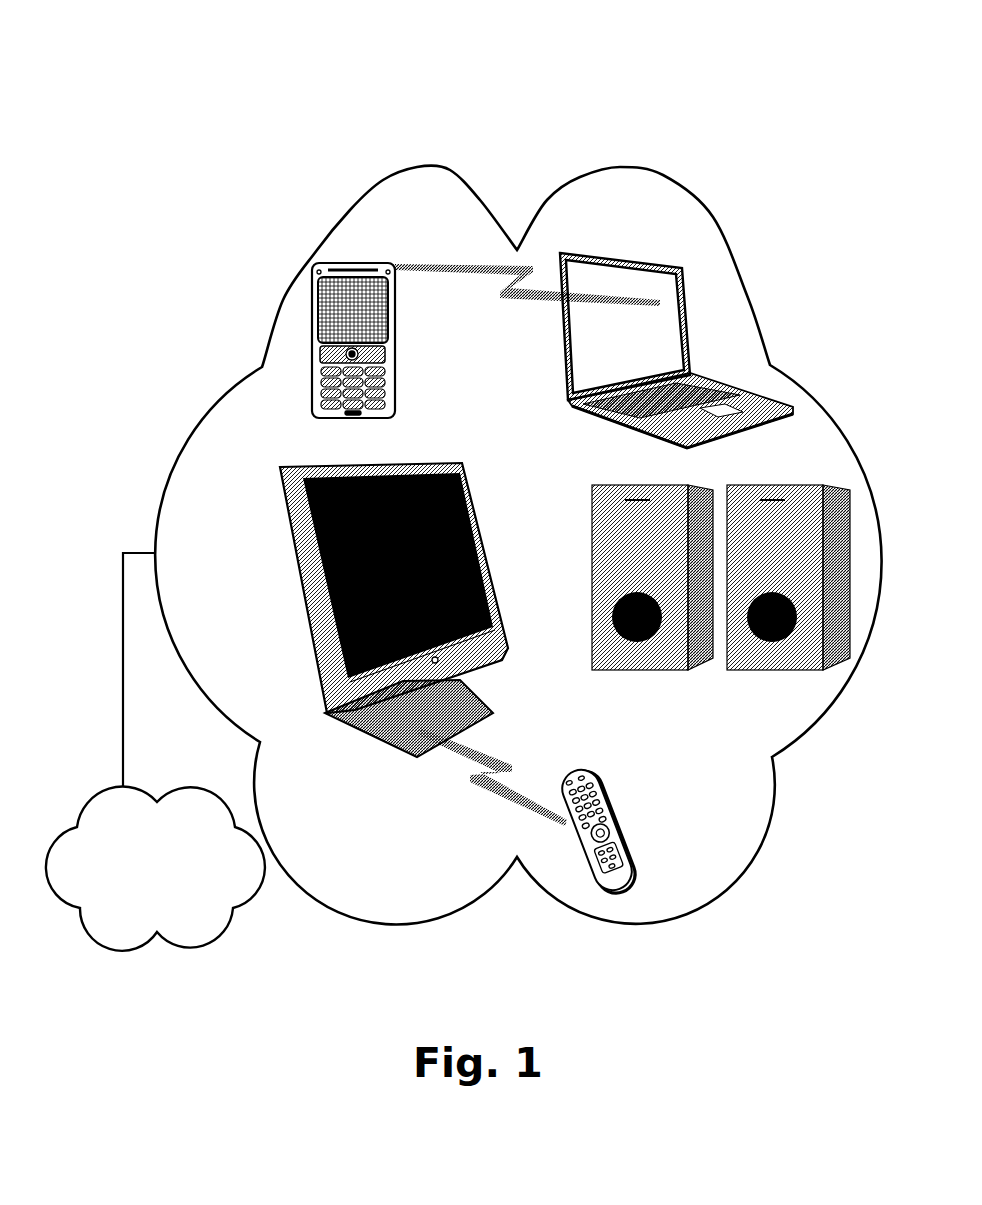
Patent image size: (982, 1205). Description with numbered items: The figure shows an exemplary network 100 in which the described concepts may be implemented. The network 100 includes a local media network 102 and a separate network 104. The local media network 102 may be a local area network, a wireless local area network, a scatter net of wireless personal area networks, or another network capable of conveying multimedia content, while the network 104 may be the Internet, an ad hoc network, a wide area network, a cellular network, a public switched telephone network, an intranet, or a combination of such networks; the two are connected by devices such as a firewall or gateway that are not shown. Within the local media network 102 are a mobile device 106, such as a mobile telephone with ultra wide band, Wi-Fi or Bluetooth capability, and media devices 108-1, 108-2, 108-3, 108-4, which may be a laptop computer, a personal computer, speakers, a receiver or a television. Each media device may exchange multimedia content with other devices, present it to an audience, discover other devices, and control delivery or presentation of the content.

The network 100 is at (246, 101).
The local media network 102 is at (622, 167).
The network 104 is at (155, 752).
The mobile device 106 is at (312, 292).
The media device 108-1 is at (690, 297).
The media device 108-2 is at (400, 757).
The media device 108-3 is at (687, 670).
The media device 108-4 is at (593, 838).